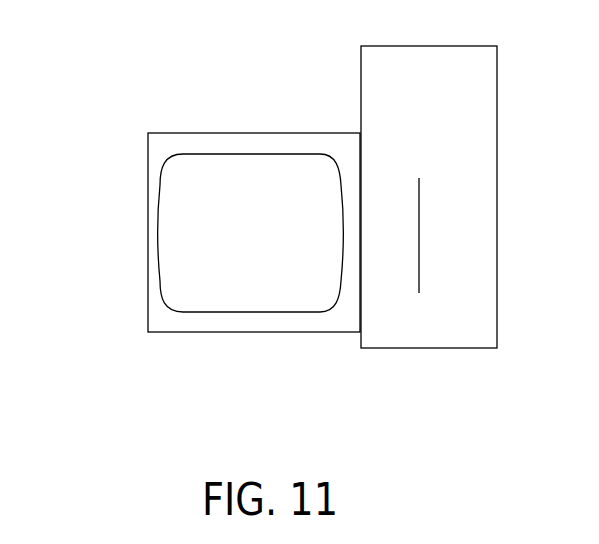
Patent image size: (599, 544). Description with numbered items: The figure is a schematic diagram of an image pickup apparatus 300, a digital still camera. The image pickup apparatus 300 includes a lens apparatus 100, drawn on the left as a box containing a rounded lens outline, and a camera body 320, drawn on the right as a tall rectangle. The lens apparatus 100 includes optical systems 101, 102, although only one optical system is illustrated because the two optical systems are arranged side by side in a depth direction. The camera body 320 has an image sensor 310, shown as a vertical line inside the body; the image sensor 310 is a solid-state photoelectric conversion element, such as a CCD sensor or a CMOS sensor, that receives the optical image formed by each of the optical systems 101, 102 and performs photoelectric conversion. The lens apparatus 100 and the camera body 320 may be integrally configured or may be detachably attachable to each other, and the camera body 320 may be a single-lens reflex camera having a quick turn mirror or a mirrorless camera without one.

The image pickup apparatus 300 is at (138, 32).
The lens apparatus 100 is at (148, 160).
The optical system 101 is at (183, 247).
The optical system 102 is at (173, 296).
The camera body 320 is at (497, 68).
The image sensor 310 is at (419, 258).